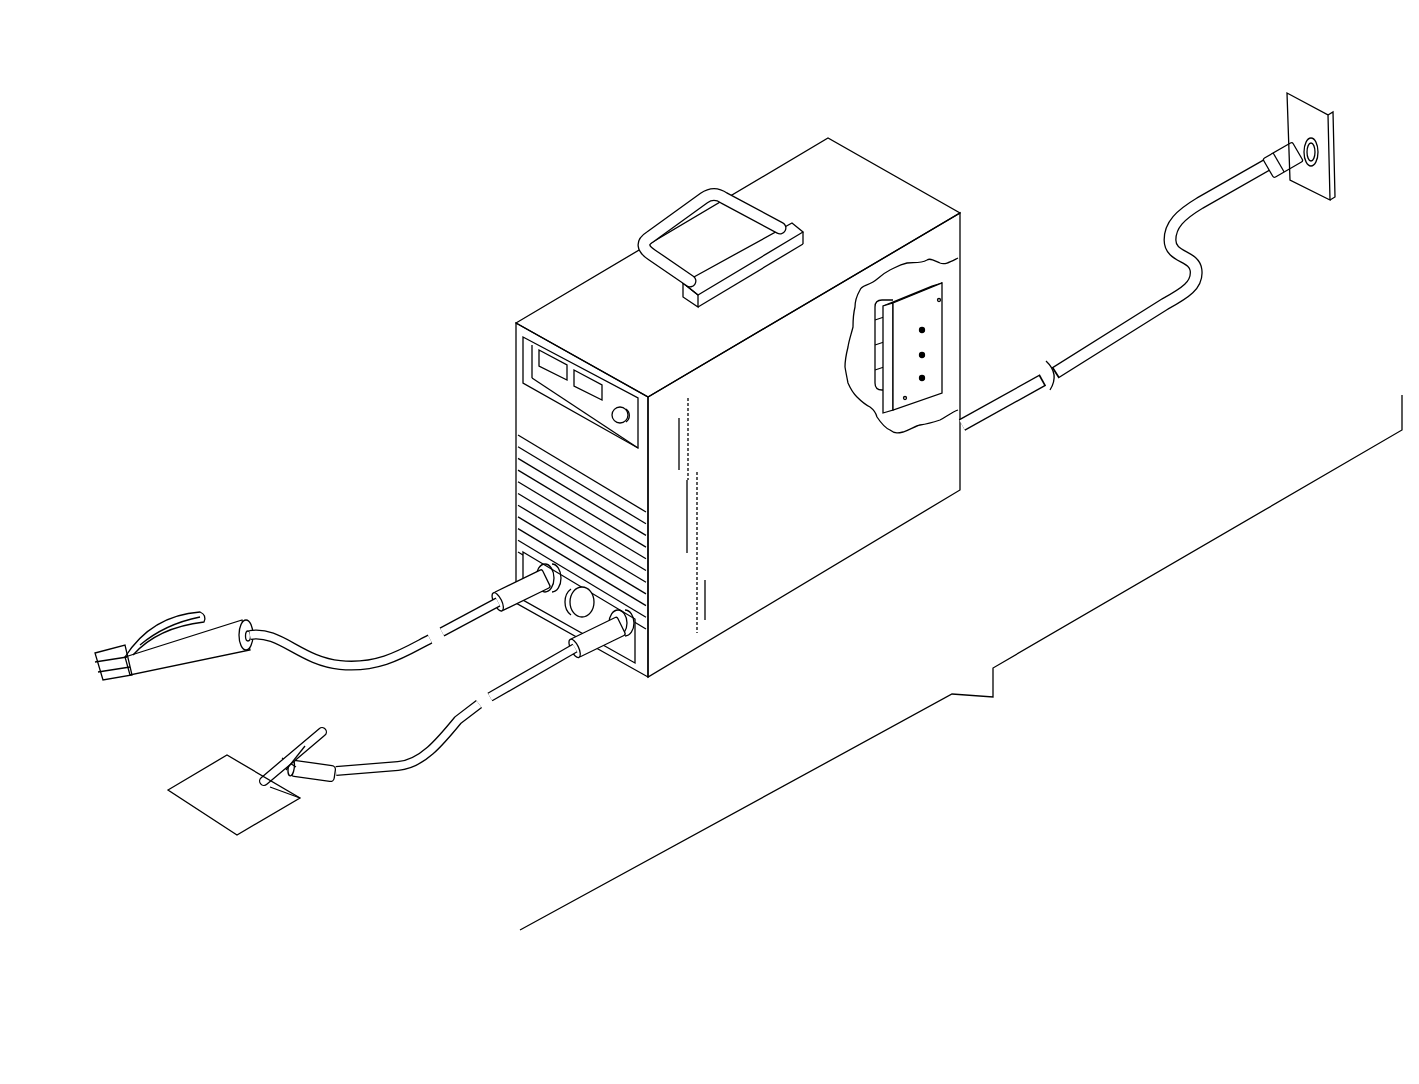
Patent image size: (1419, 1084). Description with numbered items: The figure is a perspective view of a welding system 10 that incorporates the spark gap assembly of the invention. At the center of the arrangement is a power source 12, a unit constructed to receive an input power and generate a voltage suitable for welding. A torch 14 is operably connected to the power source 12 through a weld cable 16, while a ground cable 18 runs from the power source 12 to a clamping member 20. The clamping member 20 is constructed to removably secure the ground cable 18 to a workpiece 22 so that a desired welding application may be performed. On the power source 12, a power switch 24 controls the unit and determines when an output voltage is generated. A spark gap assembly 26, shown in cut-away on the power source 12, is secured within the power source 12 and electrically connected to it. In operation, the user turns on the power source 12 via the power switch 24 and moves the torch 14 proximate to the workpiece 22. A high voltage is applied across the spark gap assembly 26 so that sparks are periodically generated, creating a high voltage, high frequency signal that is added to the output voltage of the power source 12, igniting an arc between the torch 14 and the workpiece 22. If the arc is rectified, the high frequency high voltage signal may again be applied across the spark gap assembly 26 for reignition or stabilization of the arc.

The welding system 10 is at (462, 184).
The power source 12 is at (812, 452).
The torch 14 is at (222, 635).
The weld cable 16 is at (325, 652).
The ground cable 18 is at (427, 760).
The clamping member 20 is at (307, 733).
The workpiece 22 is at (212, 803).
The power switch 24 is at (623, 406).
The spark gap assembly 26 is at (956, 325).